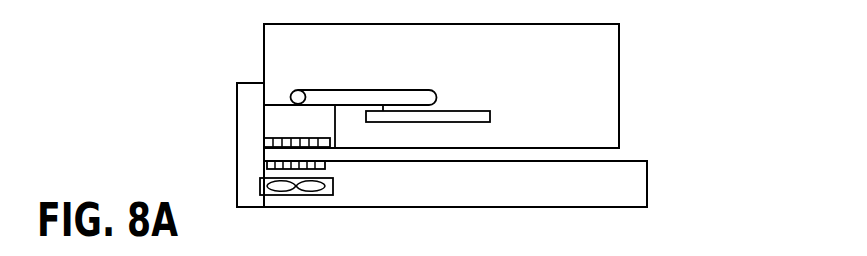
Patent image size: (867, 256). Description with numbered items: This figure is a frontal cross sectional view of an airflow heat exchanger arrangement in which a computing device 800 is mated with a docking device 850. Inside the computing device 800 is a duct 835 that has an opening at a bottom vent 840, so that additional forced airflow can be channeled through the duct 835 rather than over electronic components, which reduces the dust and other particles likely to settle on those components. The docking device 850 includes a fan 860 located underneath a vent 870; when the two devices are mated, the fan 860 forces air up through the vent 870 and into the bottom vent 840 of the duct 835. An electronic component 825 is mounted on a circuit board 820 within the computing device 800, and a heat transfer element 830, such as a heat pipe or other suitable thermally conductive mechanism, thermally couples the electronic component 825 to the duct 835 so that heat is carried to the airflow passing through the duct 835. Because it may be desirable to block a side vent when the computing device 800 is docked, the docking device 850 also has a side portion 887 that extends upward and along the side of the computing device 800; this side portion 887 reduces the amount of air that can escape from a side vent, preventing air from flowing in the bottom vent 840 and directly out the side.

The computing device 800 is at (684, 96).
The circuit board 820 is at (490, 111).
The electronic component 825 is at (413, 109).
The heat transfer element 830 is at (365, 90).
The duct 835 is at (299, 126).
The bottom vent 840 is at (319, 132).
The docking device 850 is at (455, 177).
The fan 860 is at (337, 188).
The vent 870 is at (326, 166).
The side portion 887 is at (252, 118).